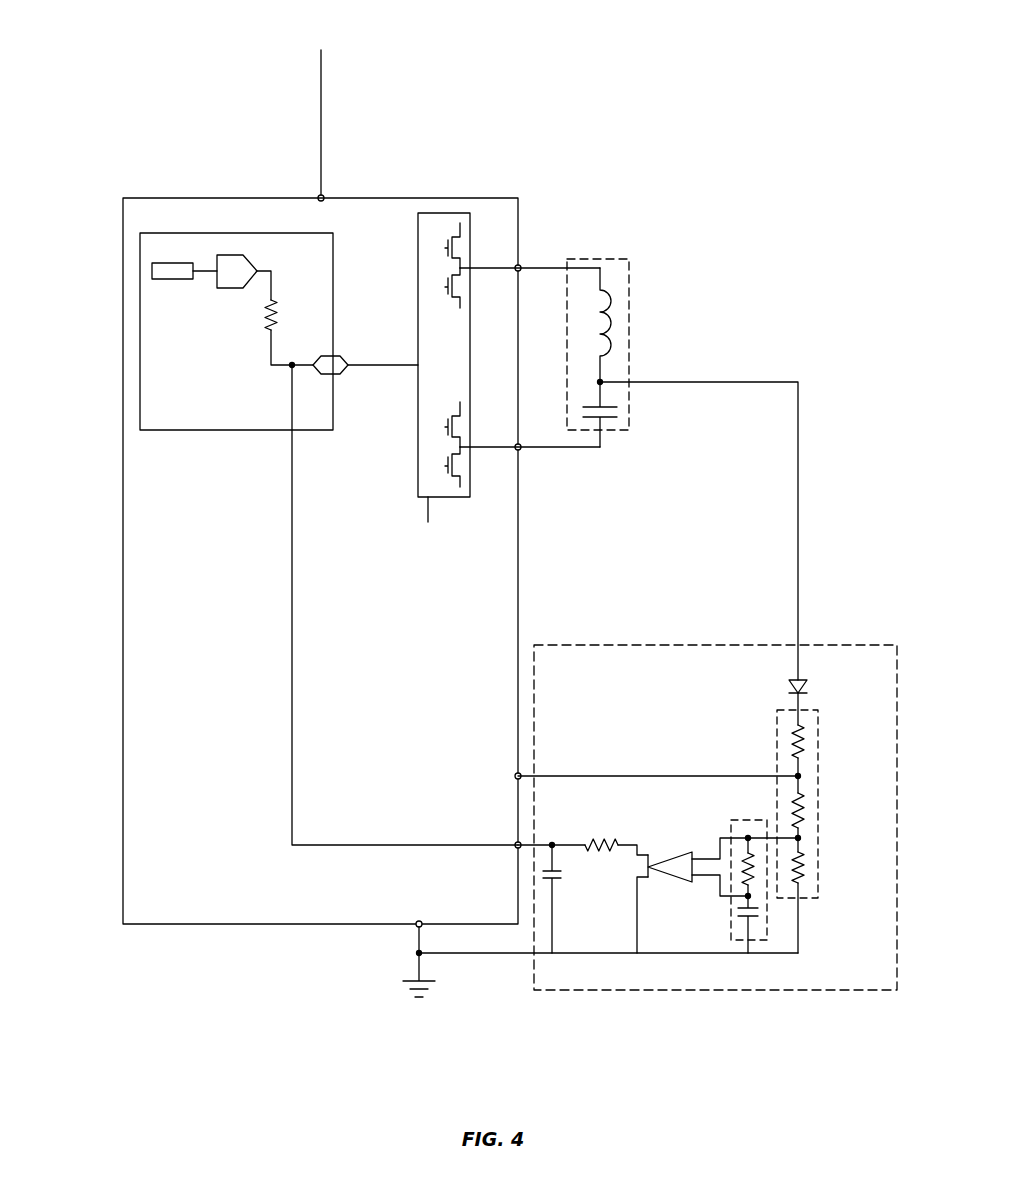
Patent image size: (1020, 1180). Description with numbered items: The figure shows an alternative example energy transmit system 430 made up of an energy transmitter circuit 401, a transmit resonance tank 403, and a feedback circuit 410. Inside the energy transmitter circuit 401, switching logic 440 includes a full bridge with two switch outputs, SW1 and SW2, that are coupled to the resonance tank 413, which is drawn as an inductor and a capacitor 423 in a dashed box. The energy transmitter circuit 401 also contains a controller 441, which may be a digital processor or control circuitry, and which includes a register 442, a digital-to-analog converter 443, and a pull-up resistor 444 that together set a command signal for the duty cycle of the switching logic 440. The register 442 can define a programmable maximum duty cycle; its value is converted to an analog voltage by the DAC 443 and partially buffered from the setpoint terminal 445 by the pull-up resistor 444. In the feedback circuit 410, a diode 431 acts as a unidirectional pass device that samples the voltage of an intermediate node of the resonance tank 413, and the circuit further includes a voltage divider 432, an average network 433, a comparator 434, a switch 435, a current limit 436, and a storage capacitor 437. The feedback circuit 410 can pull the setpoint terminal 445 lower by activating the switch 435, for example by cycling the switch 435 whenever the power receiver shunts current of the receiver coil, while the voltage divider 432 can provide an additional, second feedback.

The energy transmit system 430 is at (437, 44).
The energy transmitter circuit 401 is at (123, 213).
The transmit resonance tank 403 is at (629, 362).
The transmit resonance tank 413 is at (606, 290).
The resonant capacitor 423 is at (610, 418).
The feedback circuit 410 is at (897, 758).
The diode 431 is at (787, 688).
The voltage divider 432 is at (818, 875).
The average network 433 is at (767, 915).
The comparator 434 is at (678, 860).
The switch 435 is at (650, 873).
The current limit 436 is at (588, 843).
The storage capacitor 437 is at (553, 880).
The switching logic 440 is at (418, 432).
The controller 441 is at (238, 430).
The register 442 is at (155, 279).
The digital-to-analog converter 443 is at (248, 257).
The pull-up resistor 444 is at (280, 325).
The setpoint terminal 445 is at (350, 362).